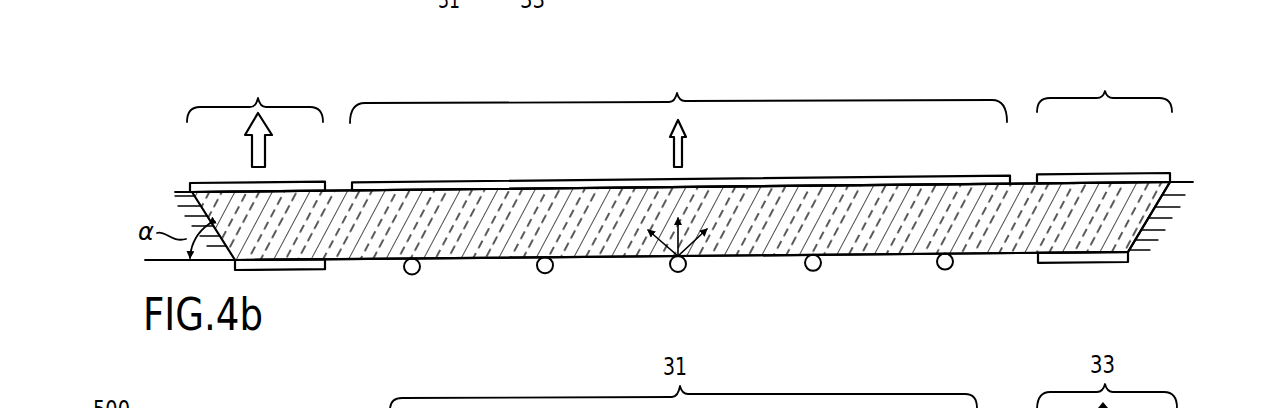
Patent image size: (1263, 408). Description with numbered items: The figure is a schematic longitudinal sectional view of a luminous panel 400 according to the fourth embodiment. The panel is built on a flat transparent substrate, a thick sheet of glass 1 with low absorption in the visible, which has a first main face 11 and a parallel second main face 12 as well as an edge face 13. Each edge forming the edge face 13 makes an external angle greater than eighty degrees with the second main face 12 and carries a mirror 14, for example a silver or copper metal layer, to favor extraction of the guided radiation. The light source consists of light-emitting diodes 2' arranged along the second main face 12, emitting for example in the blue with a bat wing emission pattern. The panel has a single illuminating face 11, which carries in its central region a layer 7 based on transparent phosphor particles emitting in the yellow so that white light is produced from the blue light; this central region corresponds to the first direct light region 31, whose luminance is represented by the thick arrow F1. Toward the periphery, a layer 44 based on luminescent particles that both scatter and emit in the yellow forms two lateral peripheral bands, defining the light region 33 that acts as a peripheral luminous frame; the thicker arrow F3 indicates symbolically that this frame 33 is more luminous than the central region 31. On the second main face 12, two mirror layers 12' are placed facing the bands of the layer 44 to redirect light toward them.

The luminous panel 400 is at (174, 125).
The glass sheet 1 is at (350, 250).
The first main face 11 is at (445, 190).
The second main face 12 is at (681, 280).
The edge face 13 is at (1157, 203).
The mirror 14 is at (1147, 232).
The phosphor particle layer 7 is at (515, 182).
The luminescent particle layer 44 is at (289, 182).
The mirror layers 12' is at (682, 285).
The light-emitting diodes 2' is at (678, 265).
The light region forming a peripheral luminous frame 33 is at (679, 90).
The first direct light region 31 is at (678, 92).
The thick arrow F3 is at (252, 152).
The thick arrow F1 is at (688, 158).